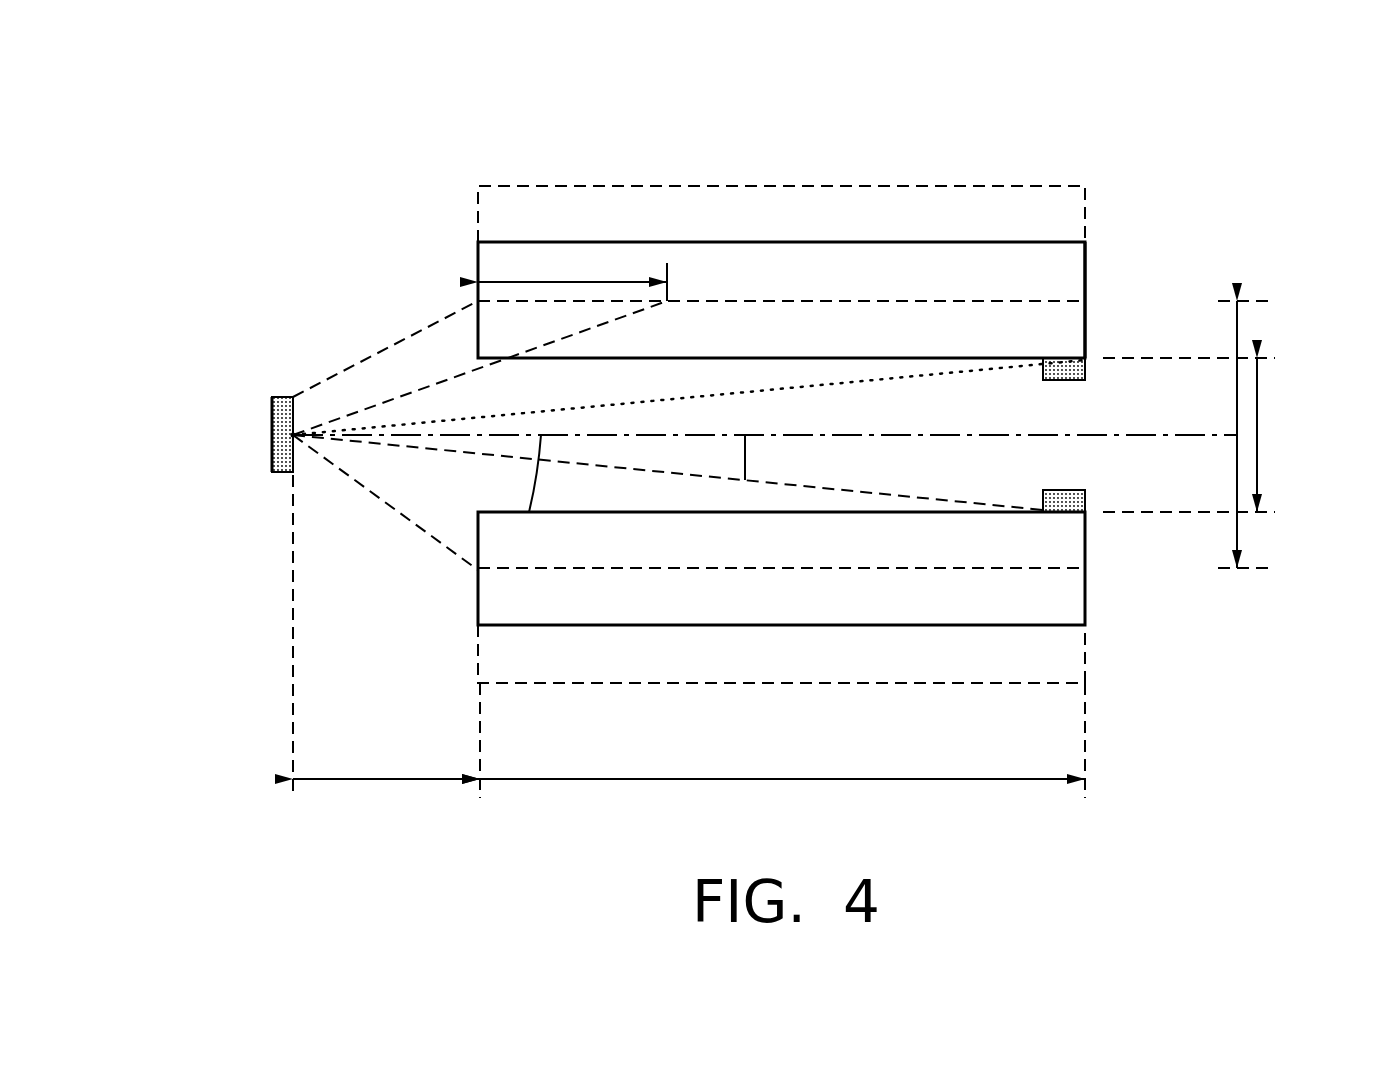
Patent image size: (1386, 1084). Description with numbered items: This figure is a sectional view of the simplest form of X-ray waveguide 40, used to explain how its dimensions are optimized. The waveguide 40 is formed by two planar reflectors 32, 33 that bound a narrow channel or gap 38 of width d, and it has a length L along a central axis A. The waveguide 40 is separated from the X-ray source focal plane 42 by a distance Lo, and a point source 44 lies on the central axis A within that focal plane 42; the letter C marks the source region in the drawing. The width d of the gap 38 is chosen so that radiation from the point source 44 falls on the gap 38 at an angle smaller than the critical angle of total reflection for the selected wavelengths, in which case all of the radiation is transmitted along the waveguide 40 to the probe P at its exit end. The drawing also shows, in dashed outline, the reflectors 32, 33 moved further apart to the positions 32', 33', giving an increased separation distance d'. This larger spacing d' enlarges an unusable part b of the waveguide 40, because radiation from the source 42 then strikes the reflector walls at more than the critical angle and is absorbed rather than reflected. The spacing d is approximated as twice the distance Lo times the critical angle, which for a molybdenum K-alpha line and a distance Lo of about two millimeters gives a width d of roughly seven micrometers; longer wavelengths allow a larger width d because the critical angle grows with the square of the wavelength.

The waveguide 40 is at (738, 242).
The reflector 33 is at (1139, 283).
The moved-apart position of reflector 33' is at (781, 150).
The reflector 32 is at (821, 568).
The moved-apart position of reflector 32' is at (836, 681).
The probe P is at (1063, 388).
The central axis A is at (903, 435).
The source cathode C is at (268, 397).
The X-ray source focal plane 42 is at (267, 445).
The point source 44 is at (298, 437).
The gap 38 is at (490, 393).
The unusable part b is at (548, 282).
The width of waveguide channel d is at (1223, 435).
The increased separation distance d' is at (1284, 434).
The distance Lo is at (368, 775).
The length L is at (718, 775).